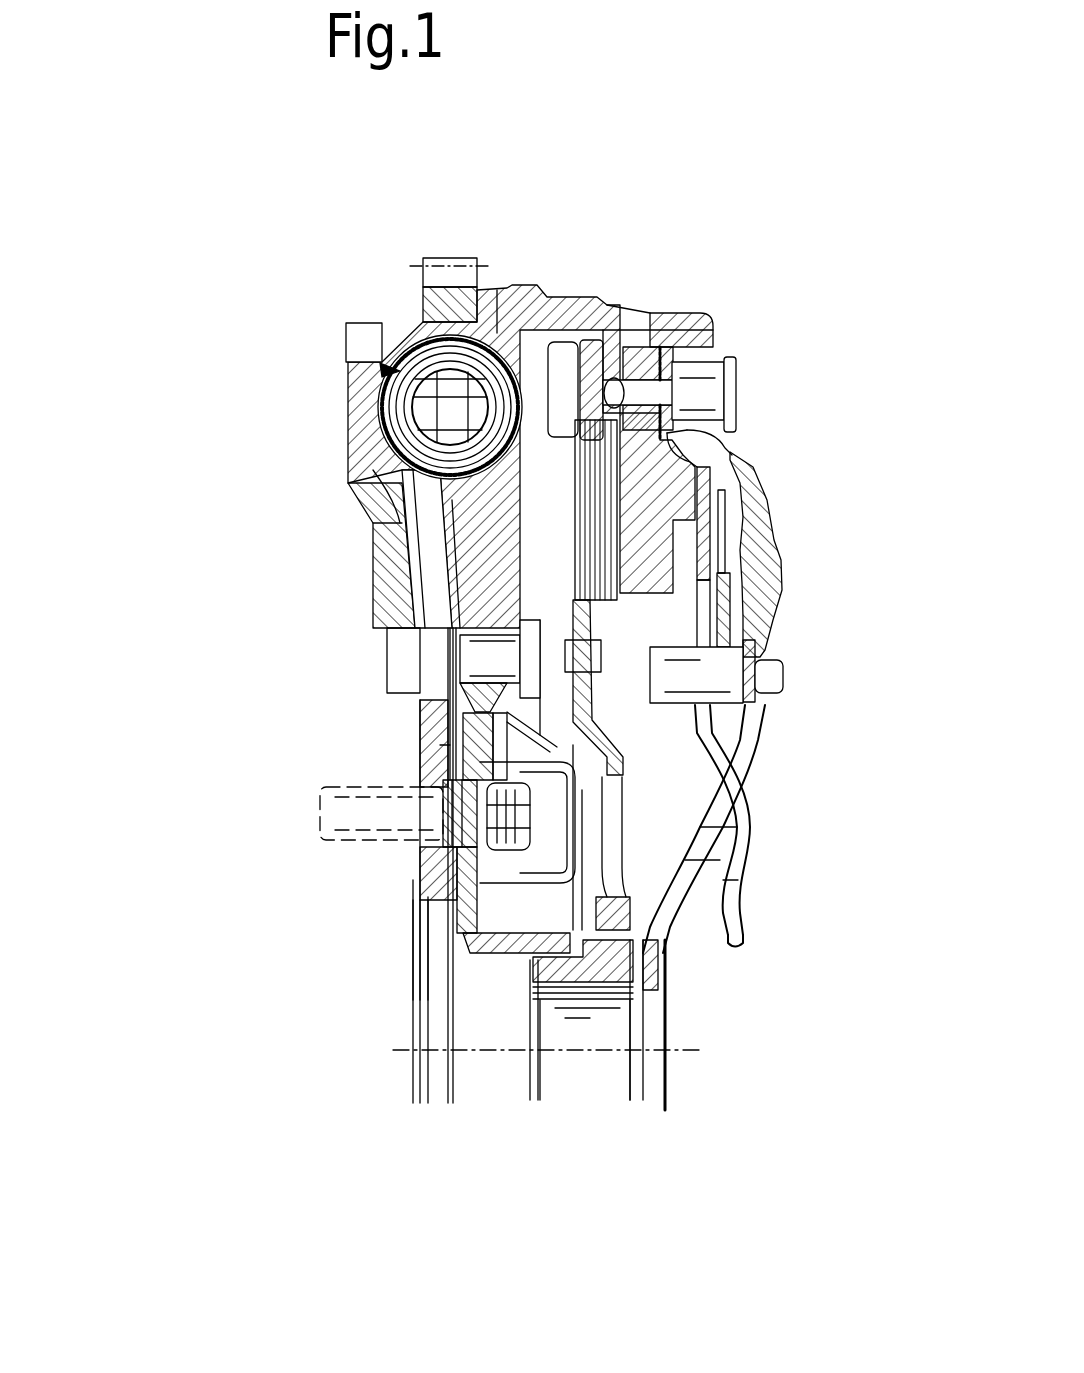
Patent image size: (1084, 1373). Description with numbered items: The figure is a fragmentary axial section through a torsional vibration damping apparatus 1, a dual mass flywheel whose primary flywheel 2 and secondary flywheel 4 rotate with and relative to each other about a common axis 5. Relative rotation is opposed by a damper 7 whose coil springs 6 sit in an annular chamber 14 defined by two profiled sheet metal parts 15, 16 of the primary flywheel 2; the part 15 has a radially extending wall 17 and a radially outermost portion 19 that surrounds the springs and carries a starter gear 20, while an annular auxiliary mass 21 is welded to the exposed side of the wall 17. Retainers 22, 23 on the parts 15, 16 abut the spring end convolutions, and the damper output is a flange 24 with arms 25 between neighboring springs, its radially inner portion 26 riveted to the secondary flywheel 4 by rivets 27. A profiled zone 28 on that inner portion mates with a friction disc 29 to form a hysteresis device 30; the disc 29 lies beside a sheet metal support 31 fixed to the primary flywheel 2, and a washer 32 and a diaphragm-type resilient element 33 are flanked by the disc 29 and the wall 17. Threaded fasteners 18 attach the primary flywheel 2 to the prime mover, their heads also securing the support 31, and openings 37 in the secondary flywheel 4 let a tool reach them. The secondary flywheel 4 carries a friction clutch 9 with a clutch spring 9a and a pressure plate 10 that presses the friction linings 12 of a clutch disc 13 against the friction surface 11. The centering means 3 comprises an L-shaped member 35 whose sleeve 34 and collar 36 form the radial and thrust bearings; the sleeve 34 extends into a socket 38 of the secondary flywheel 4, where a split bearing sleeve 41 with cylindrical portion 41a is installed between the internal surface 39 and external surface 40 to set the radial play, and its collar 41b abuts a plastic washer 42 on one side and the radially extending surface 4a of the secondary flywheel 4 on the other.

The torsional vibration damping apparatus 1 is at (690, 170).
The primary flywheel 2 is at (420, 338).
The centering means 3 is at (512, 945).
The secondary flywheel 4 is at (612, 330).
The radially extending surface of the secondary flywheel 4a is at (615, 868).
The common axis 5 is at (597, 1053).
The coil springs 6 is at (385, 400).
The damper 7 is at (370, 443).
The friction clutch 9 is at (762, 452).
The clutch spring 9a is at (703, 500).
The pressure plate 10 is at (700, 546).
The friction surface 11 is at (462, 592).
The friction linings 12 is at (690, 372).
The clutch disc 13 is at (680, 914).
The annular chamber 14 is at (525, 300).
The sheet metal part 15 is at (385, 360).
The sheet metal part 16 is at (568, 302).
The radially extending wall 17 is at (387, 630).
The threaded fasteners 18 is at (345, 818).
The radially outermost portion 19 is at (497, 300).
The starter gear 20 is at (458, 280).
The annular auxiliary mass 21 is at (380, 520).
The retainer 22 is at (390, 482).
The retainer 23 is at (600, 310).
The flange 24 is at (445, 548).
The arms 25 is at (372, 430).
The radially inner portion of the flange 26 is at (462, 708).
The rivets 27 is at (470, 653).
The profiled zone 28 is at (455, 732).
The friction disc 29 is at (600, 748).
The hysteresis device 30 is at (462, 775).
The support 31 is at (600, 765).
The washer 32 is at (545, 722).
The resilient element 33 is at (440, 748).
The sleeve 34 is at (465, 1000).
The member 35 is at (430, 970).
The collar 36 is at (425, 886).
The openings 37 is at (650, 860).
The socket 38 is at (680, 941).
The cylindrical internal surface 39 is at (655, 953).
The cylindrical external surface 40 is at (640, 996).
The bearing sleeve 41 is at (520, 950).
The cylindrical portion 41a is at (495, 955).
The collar 41b is at (600, 880).
The plastic washer 42 is at (450, 913).